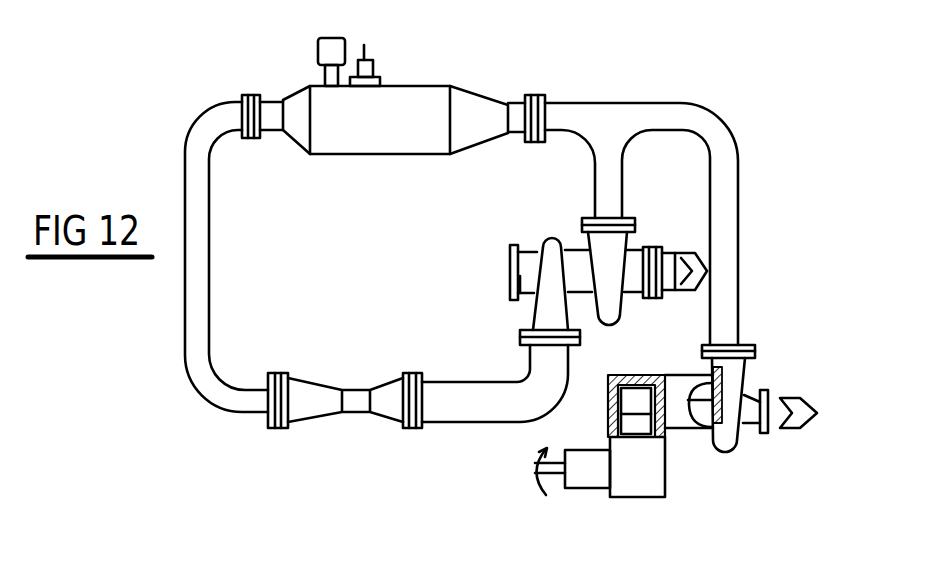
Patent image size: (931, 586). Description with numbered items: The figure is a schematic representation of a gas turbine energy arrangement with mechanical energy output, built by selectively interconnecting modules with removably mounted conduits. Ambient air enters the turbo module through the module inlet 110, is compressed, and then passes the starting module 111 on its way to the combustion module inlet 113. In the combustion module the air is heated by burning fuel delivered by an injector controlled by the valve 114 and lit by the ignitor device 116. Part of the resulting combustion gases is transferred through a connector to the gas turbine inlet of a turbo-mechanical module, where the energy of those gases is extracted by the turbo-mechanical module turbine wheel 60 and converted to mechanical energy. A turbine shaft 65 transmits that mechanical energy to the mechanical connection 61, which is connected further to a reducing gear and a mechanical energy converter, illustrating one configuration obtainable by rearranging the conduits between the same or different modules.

The combustion module inlet 113 is at (268, 104).
The valve 114 is at (325, 45).
The ignitor device 116 is at (374, 69).
The module inlet 110 is at (512, 283).
The starting module 111 is at (398, 418).
The mechanical connection 61 is at (634, 404).
The turbine shaft 65 is at (718, 414).
The turbo-mechanical module turbine wheel 60 is at (732, 418).